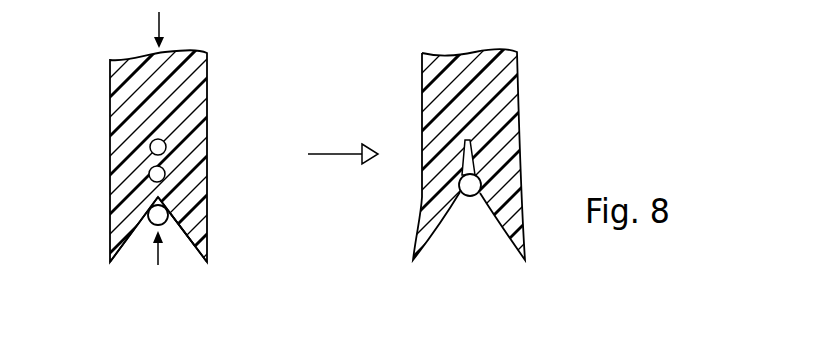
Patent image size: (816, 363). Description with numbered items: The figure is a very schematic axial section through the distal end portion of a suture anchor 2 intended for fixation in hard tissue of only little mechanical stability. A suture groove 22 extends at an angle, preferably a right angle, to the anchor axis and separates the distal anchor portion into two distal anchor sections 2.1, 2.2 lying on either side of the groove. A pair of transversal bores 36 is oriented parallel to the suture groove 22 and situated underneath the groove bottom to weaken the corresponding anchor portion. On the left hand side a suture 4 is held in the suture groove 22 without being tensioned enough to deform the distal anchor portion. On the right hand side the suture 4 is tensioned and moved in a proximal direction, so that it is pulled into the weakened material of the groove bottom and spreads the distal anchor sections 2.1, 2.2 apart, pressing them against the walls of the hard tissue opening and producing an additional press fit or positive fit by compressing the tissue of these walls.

The suture anchor 2 is at (211, 104).
The distal anchor section 2.1 is at (117, 243).
The distal anchor section 2.2 is at (197, 237).
The suture 4 is at (149, 228).
The suture groove 22 is at (181, 240).
The transversal bores 36 is at (165, 175).